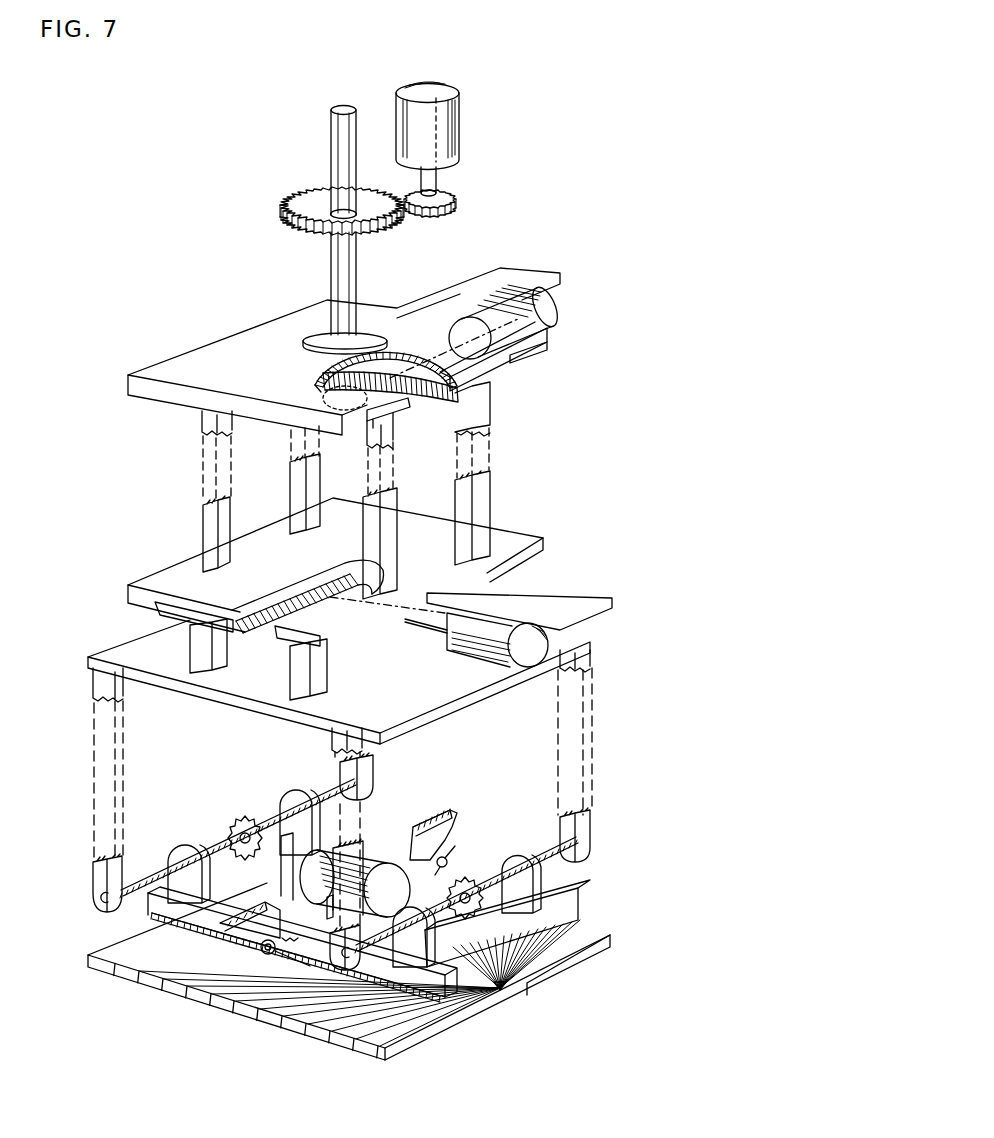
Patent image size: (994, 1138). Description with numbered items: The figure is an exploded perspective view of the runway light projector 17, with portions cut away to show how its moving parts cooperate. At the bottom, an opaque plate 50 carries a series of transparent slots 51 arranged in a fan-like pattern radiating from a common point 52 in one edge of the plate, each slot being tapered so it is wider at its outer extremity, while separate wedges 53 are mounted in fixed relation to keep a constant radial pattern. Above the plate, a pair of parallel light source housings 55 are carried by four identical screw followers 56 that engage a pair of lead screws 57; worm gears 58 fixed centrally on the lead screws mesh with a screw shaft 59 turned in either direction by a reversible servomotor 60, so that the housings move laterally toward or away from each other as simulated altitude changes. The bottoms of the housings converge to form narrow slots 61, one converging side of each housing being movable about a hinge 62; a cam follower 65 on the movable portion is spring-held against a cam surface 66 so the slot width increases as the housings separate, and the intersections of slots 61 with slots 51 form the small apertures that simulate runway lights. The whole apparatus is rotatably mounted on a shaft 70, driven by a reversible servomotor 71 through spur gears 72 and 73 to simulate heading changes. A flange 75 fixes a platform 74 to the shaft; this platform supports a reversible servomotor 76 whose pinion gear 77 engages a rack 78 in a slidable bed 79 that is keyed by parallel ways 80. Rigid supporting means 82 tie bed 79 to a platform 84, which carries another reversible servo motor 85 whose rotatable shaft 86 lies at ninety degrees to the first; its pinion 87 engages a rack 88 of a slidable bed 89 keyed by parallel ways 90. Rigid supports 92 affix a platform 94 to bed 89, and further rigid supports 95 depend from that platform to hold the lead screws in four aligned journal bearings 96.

The runway light projector 17 is at (70, 276).
The opaque plate 50 is at (430, 1040).
The transparent slots 51 is at (353, 1053).
The common point 52 is at (503, 993).
The wedges 53 is at (592, 937).
The light source housings 55 is at (110, 920).
The screw followers 56 is at (287, 800).
The lead screws 57 is at (334, 783).
The worm gears 58 is at (240, 817).
The screw shaft 59 is at (255, 873).
The reversible servomotor 60 is at (323, 906).
The narrow slots 61 is at (545, 980).
The hinge 62 is at (197, 928).
The cam follower 65 is at (253, 945).
The cam surface 66 is at (455, 817).
The shaft 70 is at (333, 151).
The reversible servomotor 71 is at (459, 88).
The spur gear 72 is at (432, 222).
The spur gear 73 is at (365, 222).
The platform 74 is at (510, 276).
The flange 75 is at (320, 337).
The reversible servomotor 76 is at (547, 320).
The pinion gear 77 is at (325, 385).
The rack 78 is at (425, 406).
The slidable bed 79 is at (500, 372).
The parallel ways 80 is at (526, 356).
The rigid supporting means 82 is at (226, 530).
The platform 84 is at (538, 544).
The reversible servo motor 85 is at (455, 650).
The rotatable shaft 86 is at (428, 630).
The pinion 87 is at (400, 587).
The rack 88 is at (260, 633).
The slidable bed 89 is at (190, 613).
The parallel ways 90 is at (148, 612).
The rigid supports 92 is at (297, 683).
The platform 94 is at (422, 711).
The rigid supports 95 is at (112, 690).
The journal bearings 96 is at (93, 902).